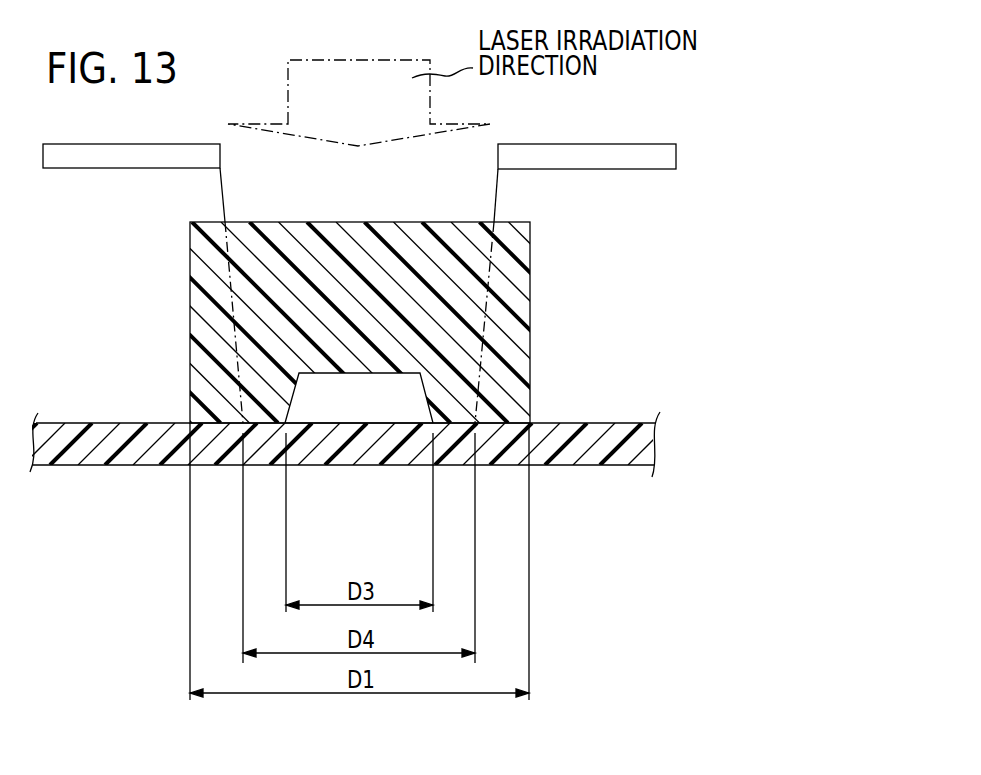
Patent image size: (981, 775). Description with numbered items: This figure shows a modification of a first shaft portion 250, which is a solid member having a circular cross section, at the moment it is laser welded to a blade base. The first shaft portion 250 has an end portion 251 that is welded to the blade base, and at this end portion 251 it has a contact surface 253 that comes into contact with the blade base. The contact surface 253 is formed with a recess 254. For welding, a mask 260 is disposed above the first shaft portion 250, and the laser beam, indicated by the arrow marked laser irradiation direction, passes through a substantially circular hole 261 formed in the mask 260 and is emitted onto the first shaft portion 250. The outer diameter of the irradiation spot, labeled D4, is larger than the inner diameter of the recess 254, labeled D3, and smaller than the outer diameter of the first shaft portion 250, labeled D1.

The first shaft portion 250 is at (369, 370).
The end portion 251 is at (512, 355).
The contact surface 253 is at (460, 427).
The recess 254 is at (357, 413).
The mask 260 is at (642, 142).
The hole 261 is at (462, 155).